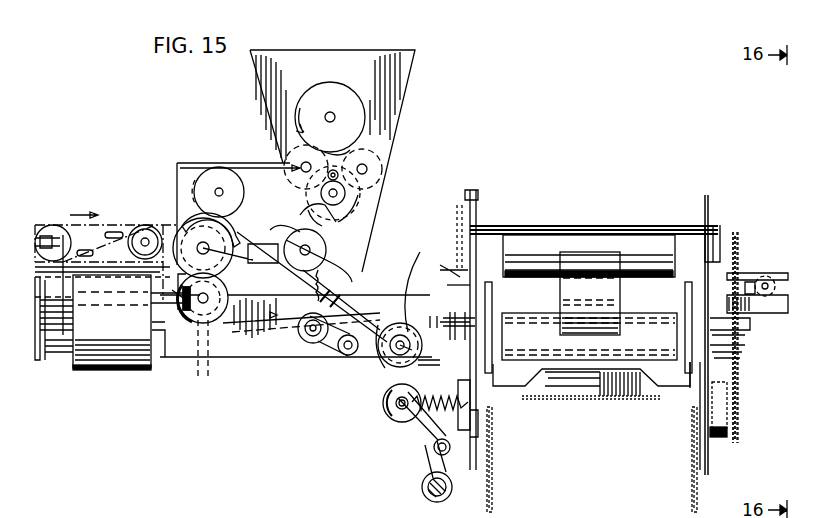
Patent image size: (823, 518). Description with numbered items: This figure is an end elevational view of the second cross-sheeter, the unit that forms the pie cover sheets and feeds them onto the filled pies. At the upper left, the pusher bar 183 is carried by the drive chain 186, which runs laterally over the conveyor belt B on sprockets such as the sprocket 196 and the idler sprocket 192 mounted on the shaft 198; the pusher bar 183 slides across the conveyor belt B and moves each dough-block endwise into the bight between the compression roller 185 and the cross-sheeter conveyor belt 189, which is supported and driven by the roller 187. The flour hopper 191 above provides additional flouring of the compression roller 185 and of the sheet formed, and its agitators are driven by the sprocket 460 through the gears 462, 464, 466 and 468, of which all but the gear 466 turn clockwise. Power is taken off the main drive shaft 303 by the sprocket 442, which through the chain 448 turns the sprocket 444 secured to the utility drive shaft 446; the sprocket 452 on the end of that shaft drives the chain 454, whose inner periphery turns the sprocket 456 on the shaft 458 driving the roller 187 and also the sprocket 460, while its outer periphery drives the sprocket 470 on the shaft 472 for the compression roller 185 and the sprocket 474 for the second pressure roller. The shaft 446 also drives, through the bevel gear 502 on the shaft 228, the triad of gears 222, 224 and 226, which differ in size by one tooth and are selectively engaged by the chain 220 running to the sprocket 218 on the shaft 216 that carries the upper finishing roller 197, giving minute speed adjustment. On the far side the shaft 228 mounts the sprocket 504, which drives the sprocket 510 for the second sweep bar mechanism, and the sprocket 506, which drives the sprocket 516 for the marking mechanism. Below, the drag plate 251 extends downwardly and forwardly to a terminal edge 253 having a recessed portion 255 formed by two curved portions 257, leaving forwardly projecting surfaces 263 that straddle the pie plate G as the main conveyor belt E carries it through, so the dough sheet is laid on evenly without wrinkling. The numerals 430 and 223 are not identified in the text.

The flour hopper 191 is at (362, 56).
The gear 466 is at (346, 97).
The gear 464 is at (298, 155).
The gear 468 is at (382, 165).
The sprocket 460 is at (356, 190).
The gear 462 is at (366, 212).
The sprocket 470 is at (238, 250).
The compression roller 185 is at (190, 224).
The shaft 472 is at (243, 257).
The sprocket 474 is at (320, 250).
The shaft 458 is at (206, 305).
The sprocket 456 is at (190, 325).
The roller 187 is at (198, 357).
The cross-sheeter conveyor belt 189 is at (258, 356).
The drive chain 186 is at (70, 224).
The idler sprocket 192 is at (50, 230).
The shaft 198 is at (32, 237).
The sprocket 196 is at (148, 226).
The pusher bar 183 is at (110, 282).
The conveyor belt B is at (88, 386).
The chain 454 is at (352, 292).
The link 430 is at (369, 296).
The drive shaft 446 is at (386, 358).
The sprocket 444 is at (398, 367).
The sprocket 452 is at (386, 408).
The gear 222 is at (455, 362).
The gear 224 is at (448, 362).
The gear 226 is at (424, 362).
The chain 448 is at (423, 422).
The sprocket 442 is at (422, 487).
The main drive shaft 303 is at (430, 492).
The shaft 216 is at (455, 253).
The sprocket 218 is at (470, 227).
The chain 220 is at (440, 267).
The bevel gear 502 is at (441, 286).
The shaft 228 is at (716, 352).
The upper finishing roller 197 is at (536, 250).
The carriage 223 is at (604, 262).
The terminal edge 253 is at (588, 340).
The recessed portion 255 is at (532, 388).
The pie plate G is at (585, 382).
The rearwardly curved portions 257 is at (540, 377).
The main conveyor belt E is at (655, 403).
The drag plate 251 is at (670, 373).
The forwardly projecting surfaces 263 is at (687, 393).
The sprocket 510 is at (738, 242).
The sprocket 516 is at (740, 312).
The sprocket 506 is at (742, 342).
The sprocket 504 is at (744, 360).